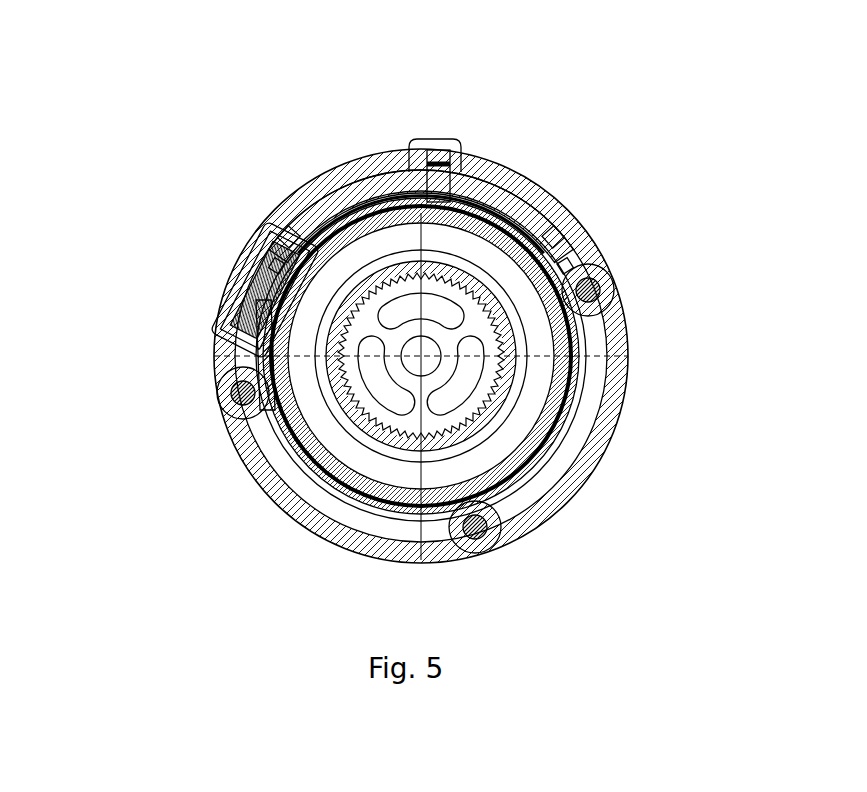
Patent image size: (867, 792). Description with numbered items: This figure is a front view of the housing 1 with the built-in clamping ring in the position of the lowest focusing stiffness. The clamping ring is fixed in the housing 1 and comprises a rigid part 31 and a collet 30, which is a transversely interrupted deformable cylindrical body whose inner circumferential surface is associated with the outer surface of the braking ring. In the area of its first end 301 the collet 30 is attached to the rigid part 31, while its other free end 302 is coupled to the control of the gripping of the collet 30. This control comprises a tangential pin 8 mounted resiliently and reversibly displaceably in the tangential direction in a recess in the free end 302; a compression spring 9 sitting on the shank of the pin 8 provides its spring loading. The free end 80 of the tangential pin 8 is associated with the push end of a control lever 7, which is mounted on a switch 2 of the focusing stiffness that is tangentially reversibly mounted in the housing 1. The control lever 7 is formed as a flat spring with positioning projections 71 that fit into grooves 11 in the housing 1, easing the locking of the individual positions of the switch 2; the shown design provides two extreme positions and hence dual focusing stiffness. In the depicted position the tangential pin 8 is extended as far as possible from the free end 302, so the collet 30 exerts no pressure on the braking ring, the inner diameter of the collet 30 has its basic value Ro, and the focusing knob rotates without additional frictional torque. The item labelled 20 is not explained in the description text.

The housing 1 is at (623, 305).
The switch of the focusing stiffness 2 is at (468, 180).
The basic value of the inner diameter of the collet Ro is at (520, 205).
The control lever 7 is at (282, 210).
The tangential pin 8 is at (240, 270).
The compression spring 9 is at (243, 305).
The grooves 11 is at (308, 215).
The tab 20 is at (441, 142).
The collet 30 is at (537, 527).
The rigid part of the clamping ring 31 is at (268, 380).
The positioning projections 71 is at (343, 222).
The free end of the tangential pin 80 is at (260, 223).
The first end of the collet 301 is at (230, 385).
The free end of the collet 302 is at (262, 342).